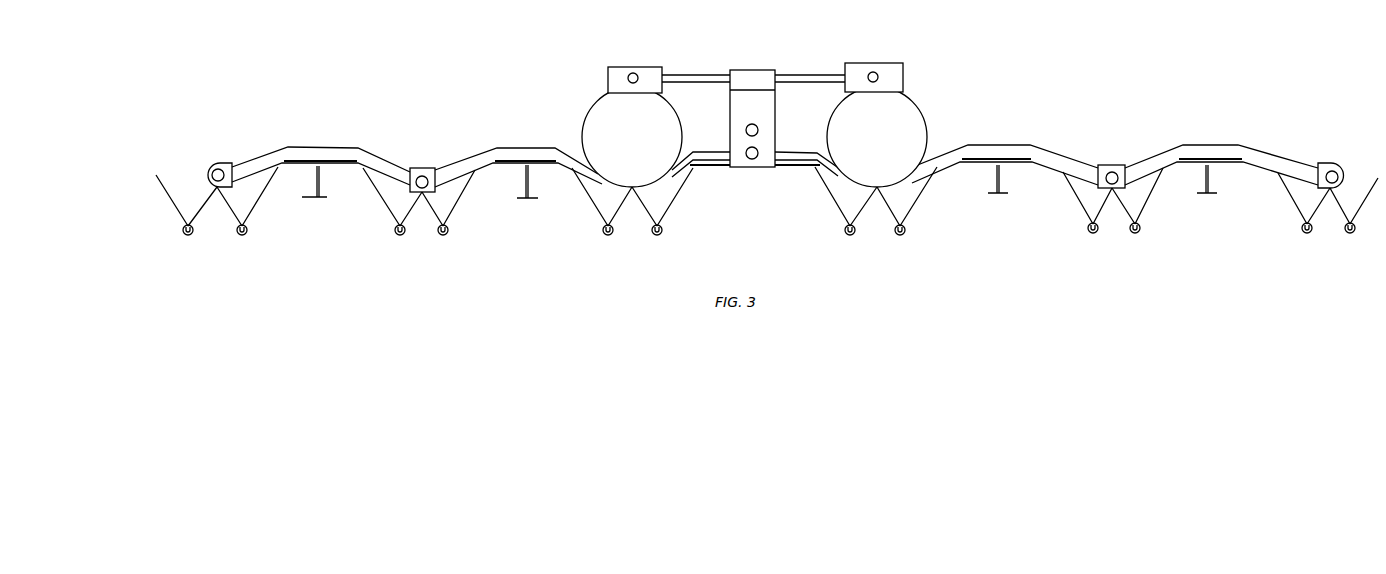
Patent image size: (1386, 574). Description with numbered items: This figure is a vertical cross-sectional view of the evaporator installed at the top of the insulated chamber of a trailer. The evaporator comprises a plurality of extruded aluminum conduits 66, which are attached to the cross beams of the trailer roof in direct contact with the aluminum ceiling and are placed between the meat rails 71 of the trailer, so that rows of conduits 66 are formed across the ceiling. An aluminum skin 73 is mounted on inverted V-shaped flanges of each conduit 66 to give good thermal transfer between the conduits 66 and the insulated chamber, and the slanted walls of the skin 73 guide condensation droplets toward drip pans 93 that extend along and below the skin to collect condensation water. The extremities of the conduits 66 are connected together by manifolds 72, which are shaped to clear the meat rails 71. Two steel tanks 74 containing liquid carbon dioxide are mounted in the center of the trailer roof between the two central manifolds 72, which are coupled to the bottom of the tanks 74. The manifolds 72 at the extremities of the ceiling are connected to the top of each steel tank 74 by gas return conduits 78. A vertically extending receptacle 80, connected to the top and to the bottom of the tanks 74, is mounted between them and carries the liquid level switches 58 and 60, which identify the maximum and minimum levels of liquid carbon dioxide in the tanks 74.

The liquid level switch 58 is at (759, 128).
The liquid level switch 60 is at (759, 152).
The extruded aluminum conduit 66 is at (215, 160).
The meat rail 71 is at (313, 200).
The manifold 72 is at (320, 147).
The aluminum skin 73 is at (390, 203).
The steel tank 74 is at (640, 147).
The gas return conduit 78 is at (638, 66).
The vertically extending receptacle 80 is at (735, 107).
The drip pan 93 is at (662, 232).